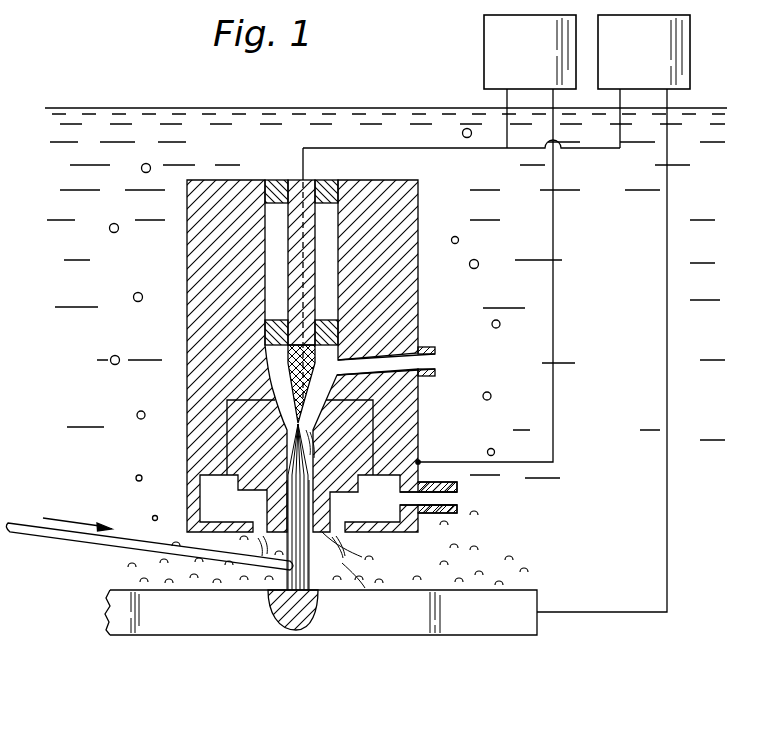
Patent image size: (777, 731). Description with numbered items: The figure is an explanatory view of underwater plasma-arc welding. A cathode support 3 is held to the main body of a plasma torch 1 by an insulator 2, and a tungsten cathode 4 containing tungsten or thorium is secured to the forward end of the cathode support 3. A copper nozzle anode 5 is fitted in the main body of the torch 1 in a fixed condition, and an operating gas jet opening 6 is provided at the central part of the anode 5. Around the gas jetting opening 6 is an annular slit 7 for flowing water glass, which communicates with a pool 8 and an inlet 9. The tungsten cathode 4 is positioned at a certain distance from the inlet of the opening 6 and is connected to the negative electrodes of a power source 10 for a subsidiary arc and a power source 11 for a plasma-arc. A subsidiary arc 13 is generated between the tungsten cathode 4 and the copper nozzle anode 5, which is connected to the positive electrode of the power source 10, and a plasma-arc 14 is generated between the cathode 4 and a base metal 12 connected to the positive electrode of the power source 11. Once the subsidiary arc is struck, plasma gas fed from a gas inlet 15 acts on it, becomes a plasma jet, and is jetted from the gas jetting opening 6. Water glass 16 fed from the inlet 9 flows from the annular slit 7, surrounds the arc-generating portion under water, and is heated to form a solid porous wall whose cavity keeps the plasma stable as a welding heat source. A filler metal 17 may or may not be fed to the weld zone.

The plasma torch 1 is at (418, 263).
The insulator 2 is at (328, 180).
The cathode support 3 is at (293, 180).
The tungsten cathode 4 is at (322, 356).
The copper nozzle anode 5 is at (340, 539).
The operating gas jet opening 6 is at (283, 537).
The annular slit 7 is at (258, 527).
The pool 8 is at (390, 509).
The inlet 9 is at (458, 498).
The power source for subsidiary arc 10 is at (461, 239).
The power source for plasma-arc 11 is at (613, 313).
The base metal 12 is at (490, 636).
The subsidiary arc 13 is at (299, 426).
The plasma-arc 14 is at (313, 558).
The gas inlet 15 is at (436, 363).
The water glass 16 is at (342, 563).
The filler metal 17 is at (28, 523).